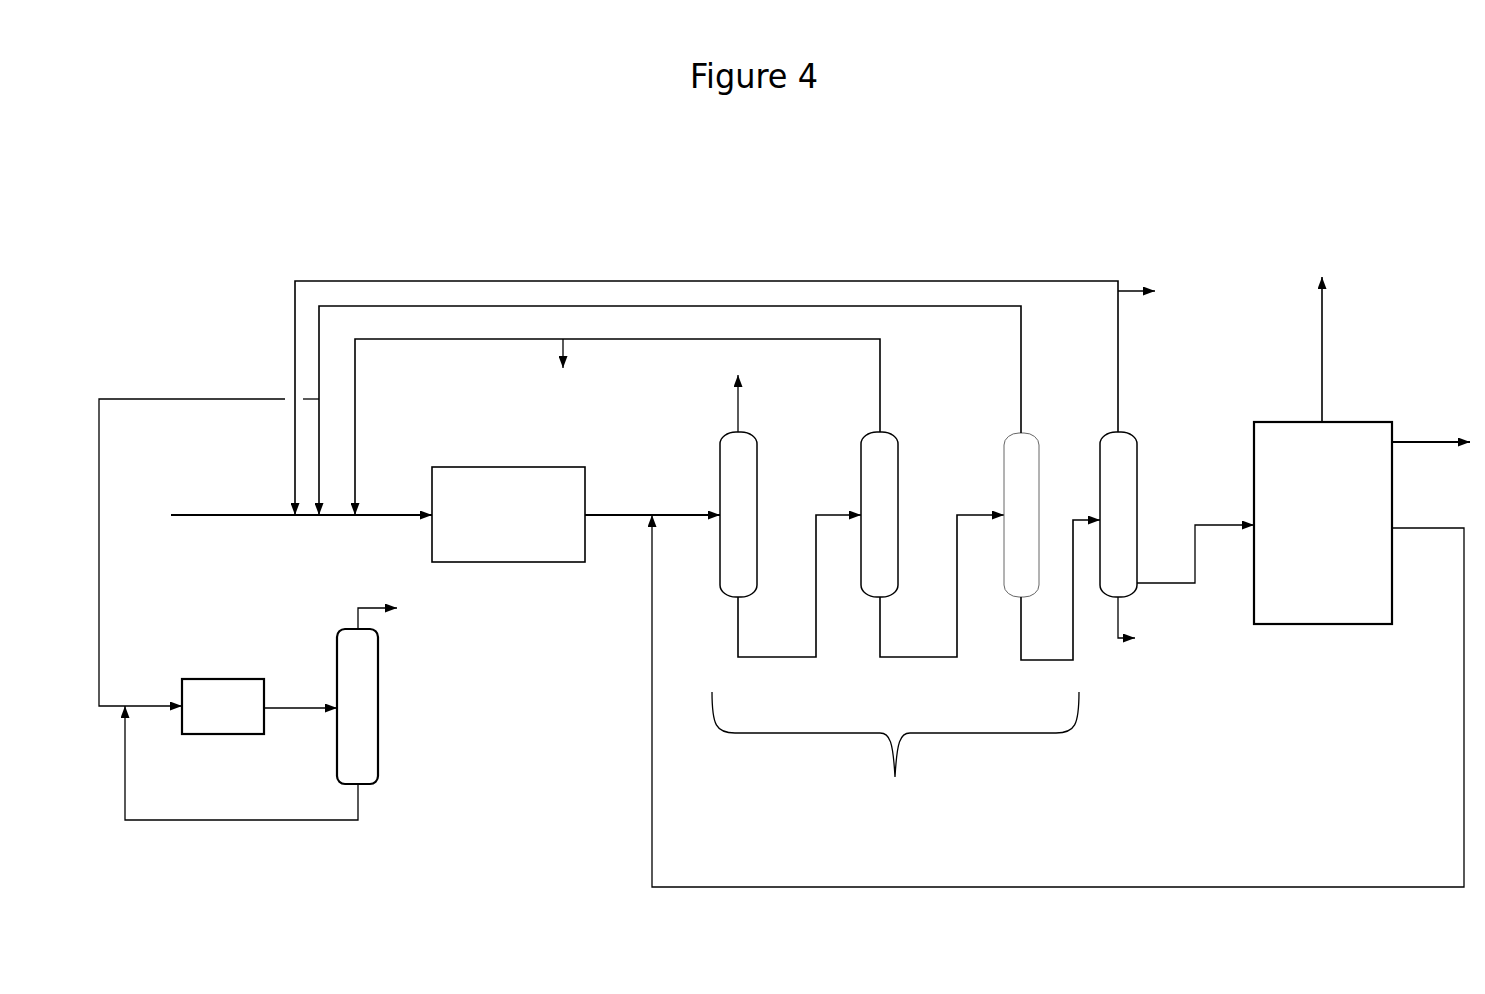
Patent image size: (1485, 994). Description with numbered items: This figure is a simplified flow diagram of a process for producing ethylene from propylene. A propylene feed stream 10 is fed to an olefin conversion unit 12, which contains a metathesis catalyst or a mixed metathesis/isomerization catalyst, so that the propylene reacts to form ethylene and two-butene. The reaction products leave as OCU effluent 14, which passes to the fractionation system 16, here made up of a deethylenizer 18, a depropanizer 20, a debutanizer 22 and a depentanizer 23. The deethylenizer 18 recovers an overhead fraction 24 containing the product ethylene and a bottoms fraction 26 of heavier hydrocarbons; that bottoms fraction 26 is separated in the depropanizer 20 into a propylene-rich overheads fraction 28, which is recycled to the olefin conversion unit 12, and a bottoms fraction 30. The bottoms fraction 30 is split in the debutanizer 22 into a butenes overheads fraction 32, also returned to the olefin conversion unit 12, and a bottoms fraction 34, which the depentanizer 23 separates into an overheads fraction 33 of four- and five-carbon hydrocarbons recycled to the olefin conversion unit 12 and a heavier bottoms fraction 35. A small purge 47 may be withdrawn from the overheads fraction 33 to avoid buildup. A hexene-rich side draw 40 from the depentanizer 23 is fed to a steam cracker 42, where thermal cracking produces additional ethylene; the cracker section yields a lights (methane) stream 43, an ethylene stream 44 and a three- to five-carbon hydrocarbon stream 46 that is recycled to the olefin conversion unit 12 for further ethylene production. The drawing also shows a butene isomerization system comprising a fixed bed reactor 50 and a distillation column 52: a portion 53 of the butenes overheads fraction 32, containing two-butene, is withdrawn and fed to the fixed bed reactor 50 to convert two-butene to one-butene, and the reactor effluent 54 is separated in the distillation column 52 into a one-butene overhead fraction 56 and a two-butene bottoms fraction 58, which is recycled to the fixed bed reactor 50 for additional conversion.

The propylene feed stream 10 is at (299, 497).
The olefin conversion unit 12 is at (508, 514).
The OCU effluent 14 is at (652, 498).
The fractionation system 16 is at (895, 749).
The deethylenizer 18 is at (738, 514).
The depropanizer 20 is at (879, 514).
The debutanizer 22 is at (1021, 515).
The depentanizer 23 is at (1118, 514).
The overhead fraction 24 is at (726, 403).
The bottoms fraction 26 is at (787, 586).
The C3 overheads fraction 28 is at (617, 427).
The C4+ bottoms fraction 30 is at (942, 586).
The C4 overheads fraction 32 is at (670, 410).
The C4-C5 overheads fraction 33 is at (706, 398).
The bottoms fraction 34 is at (1060, 590).
The C6+ bottoms fraction 35 is at (1146, 624).
The C6-rich side draw 40 is at (1195, 554).
The steam cracker 42 is at (1323, 523).
The lights stream 43 is at (1431, 428).
The ethylene stream 44 is at (1338, 349).
The C3-C5 hydrocarbon stream 46 is at (1058, 691).
The C4/C5 purge 47 is at (1150, 291).
The fixed bed reactor 50 is at (223, 706).
The distillation column 52 is at (357, 706).
The portion of C4 overheads 53 is at (209, 541).
The isomerization reactor effluent 54 is at (300, 696).
The 1-butene overhead fraction 56 is at (389, 612).
The 2-butene bottoms fraction 58 is at (241, 764).